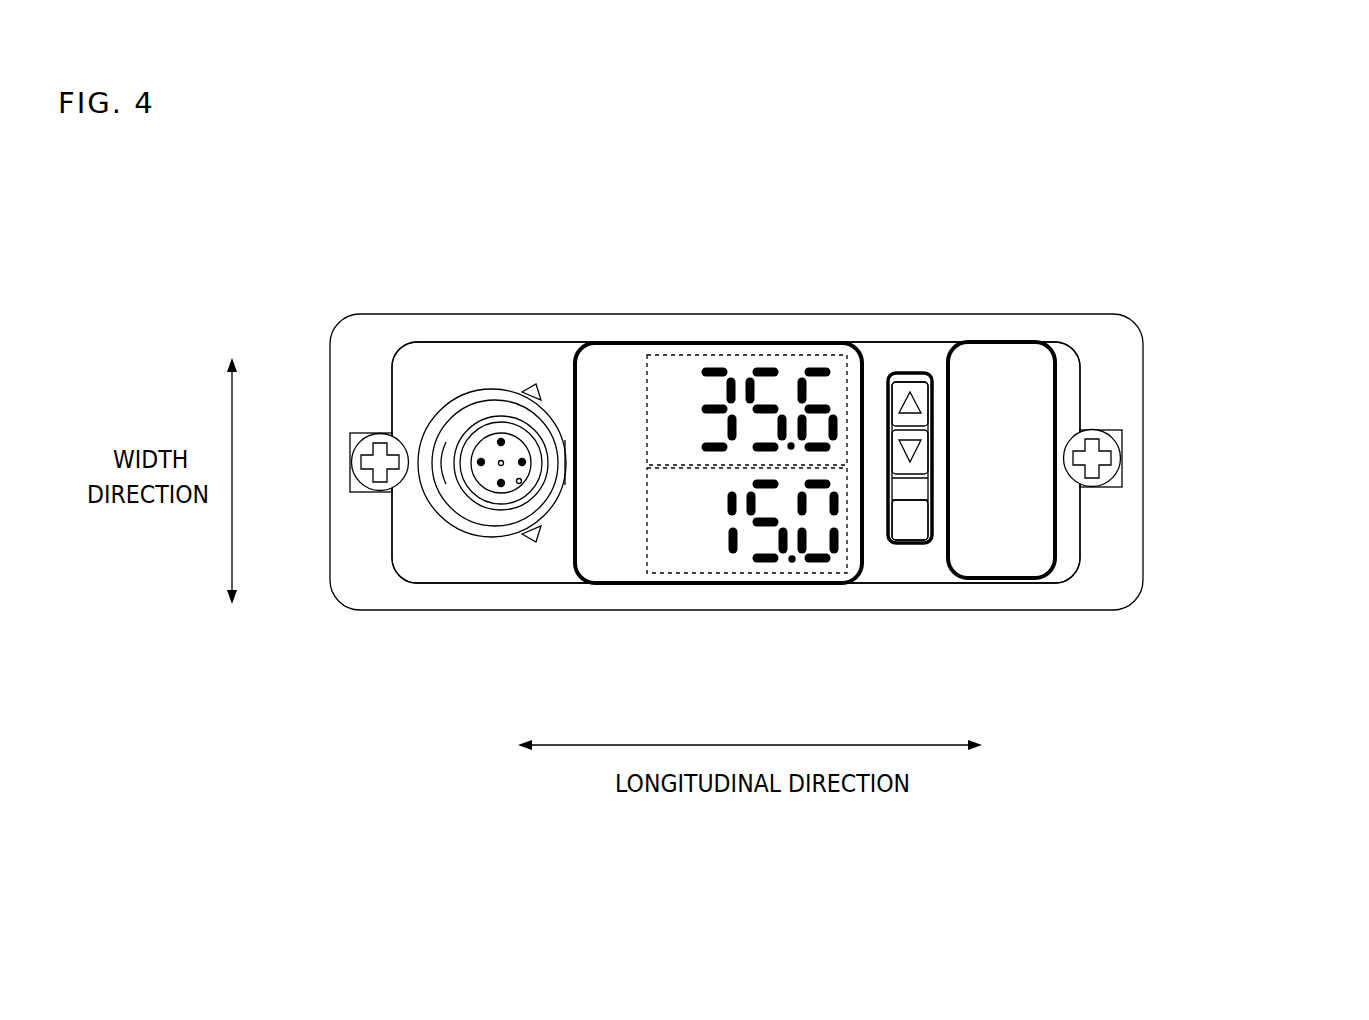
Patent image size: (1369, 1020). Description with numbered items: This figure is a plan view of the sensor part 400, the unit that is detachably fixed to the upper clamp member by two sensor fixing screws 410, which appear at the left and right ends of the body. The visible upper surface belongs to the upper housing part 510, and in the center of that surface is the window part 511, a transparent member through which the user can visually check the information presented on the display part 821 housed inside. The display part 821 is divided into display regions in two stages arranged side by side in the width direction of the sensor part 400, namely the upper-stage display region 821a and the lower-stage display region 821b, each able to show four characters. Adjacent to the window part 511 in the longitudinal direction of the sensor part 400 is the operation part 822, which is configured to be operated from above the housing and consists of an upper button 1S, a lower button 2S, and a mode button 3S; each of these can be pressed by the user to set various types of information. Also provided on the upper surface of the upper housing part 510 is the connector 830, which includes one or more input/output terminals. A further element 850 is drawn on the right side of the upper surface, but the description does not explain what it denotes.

The sensor part 400 is at (1342, 160).
The sensor fixing screw 410 is at (362, 488).
The upper housing part 510 is at (820, 330).
The window part 511 is at (618, 373).
The display part 821 is at (608, 550).
The upper-stage display region 821a is at (727, 355).
The lower-stage display region 821b is at (727, 573).
The operation part 822 is at (1105, 220).
The upper button 1S is at (905, 372).
The lower button 2S is at (937, 432).
The mode button 3S is at (917, 520).
The connector 830 is at (502, 432).
The indicator window 850 is at (990, 555).